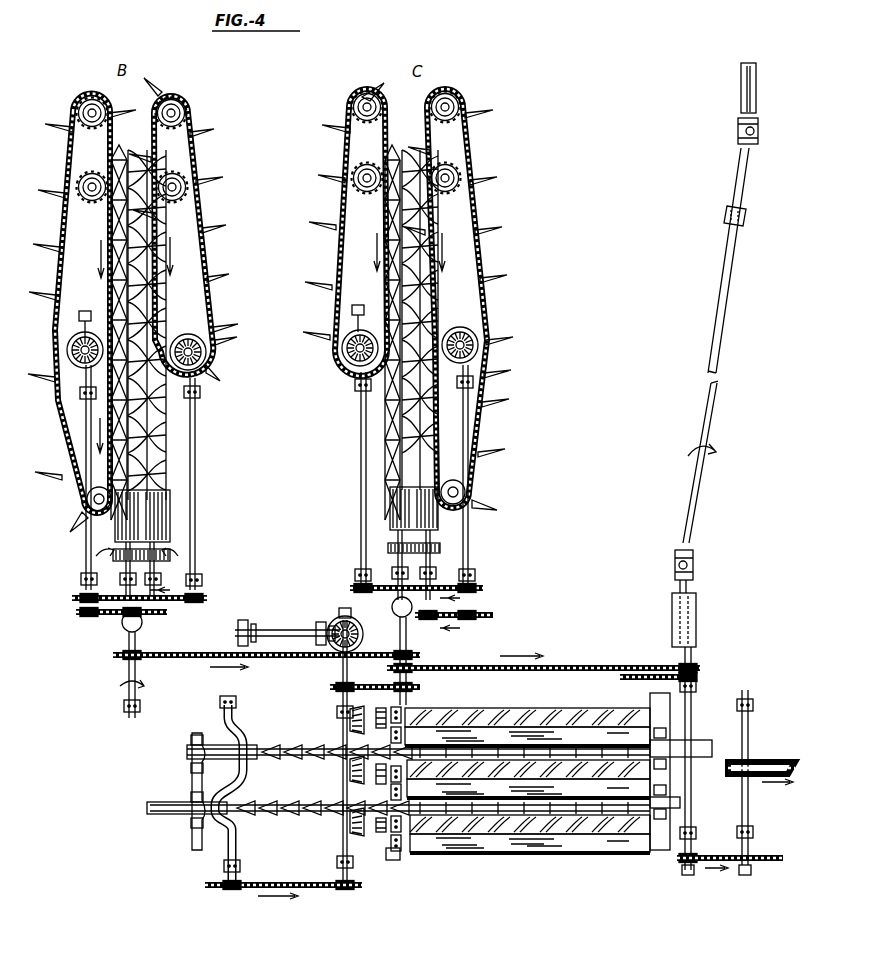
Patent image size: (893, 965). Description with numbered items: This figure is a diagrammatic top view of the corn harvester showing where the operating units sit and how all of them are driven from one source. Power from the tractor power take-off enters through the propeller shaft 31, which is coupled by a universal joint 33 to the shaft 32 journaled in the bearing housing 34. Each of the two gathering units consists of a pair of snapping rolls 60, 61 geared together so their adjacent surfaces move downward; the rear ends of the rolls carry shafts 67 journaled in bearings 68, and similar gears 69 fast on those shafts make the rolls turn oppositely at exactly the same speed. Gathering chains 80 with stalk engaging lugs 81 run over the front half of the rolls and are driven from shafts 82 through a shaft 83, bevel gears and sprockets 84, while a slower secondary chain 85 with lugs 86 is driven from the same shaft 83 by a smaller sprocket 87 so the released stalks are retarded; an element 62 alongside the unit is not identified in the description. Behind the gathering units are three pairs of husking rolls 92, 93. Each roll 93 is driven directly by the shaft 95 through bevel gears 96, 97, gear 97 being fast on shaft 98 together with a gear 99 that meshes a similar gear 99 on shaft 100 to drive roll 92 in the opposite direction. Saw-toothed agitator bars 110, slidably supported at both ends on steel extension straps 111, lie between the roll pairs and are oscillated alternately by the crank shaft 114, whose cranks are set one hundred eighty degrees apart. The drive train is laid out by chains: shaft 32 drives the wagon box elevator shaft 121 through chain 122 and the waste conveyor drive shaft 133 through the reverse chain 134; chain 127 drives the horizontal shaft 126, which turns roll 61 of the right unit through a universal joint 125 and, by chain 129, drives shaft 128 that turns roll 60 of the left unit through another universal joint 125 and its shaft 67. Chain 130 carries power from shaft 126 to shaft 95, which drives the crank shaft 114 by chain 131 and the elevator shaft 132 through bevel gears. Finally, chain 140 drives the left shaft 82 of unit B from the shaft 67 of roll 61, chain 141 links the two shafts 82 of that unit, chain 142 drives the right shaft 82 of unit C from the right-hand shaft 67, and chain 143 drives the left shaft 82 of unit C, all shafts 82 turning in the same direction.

The propeller shaft 31 is at (696, 496).
The shaft 32 is at (696, 652).
The universal joint 33 is at (694, 566).
The bearing housing 34 is at (697, 620).
The snapping roll 60 is at (278, 325).
The snapping roll 61 is at (158, 408).
The shaft 62 is at (192, 470).
The shaft 67 is at (118, 538).
The bearing 68 is at (278, 578).
The gear 69 is at (118, 562).
The gathering chain 80 is at (72, 222).
The stalk engaging lug 81 is at (72, 196).
The shaft 82 is at (84, 444).
The shaft 83 is at (208, 356).
The sprocket 84 is at (70, 320).
The secondary chain 85 is at (78, 401).
The stalk engaging lug 86 is at (60, 420).
The sprocket 87 is at (66, 360).
The husking roll 92 is at (527, 789).
The husking roll 93 is at (506, 706).
The shaft 95 is at (342, 672).
The bevel gear 96 is at (340, 732).
The bevel gear 97 is at (337, 712).
The shaft 98 is at (392, 710).
The gear 99 is at (380, 850).
The shaft 100 is at (396, 860).
The saw-toothed agitator bar 110 is at (300, 750).
The steel extension strap 111 is at (194, 770).
The crank shaft 114 is at (238, 845).
The wagon box elevator shaft 121 is at (750, 816).
The chain 122 is at (770, 856).
The universal joint 125 is at (124, 626).
The horizontally positioned shaft 126 is at (410, 644).
The chain 127 is at (562, 662).
The horizontally positioned shaft 128 is at (126, 678).
The chain 129 is at (170, 660).
The chain 130 is at (372, 680).
The chain 131 is at (294, 884).
The elevator shaft 132 is at (268, 640).
The waste conveyor drive shaft 133 is at (632, 690).
The reverse chain 134 is at (700, 683).
The chain 140 is at (72, 612).
The chain 141 is at (72, 593).
The chain 142 is at (486, 613).
The chain 143 is at (348, 590).